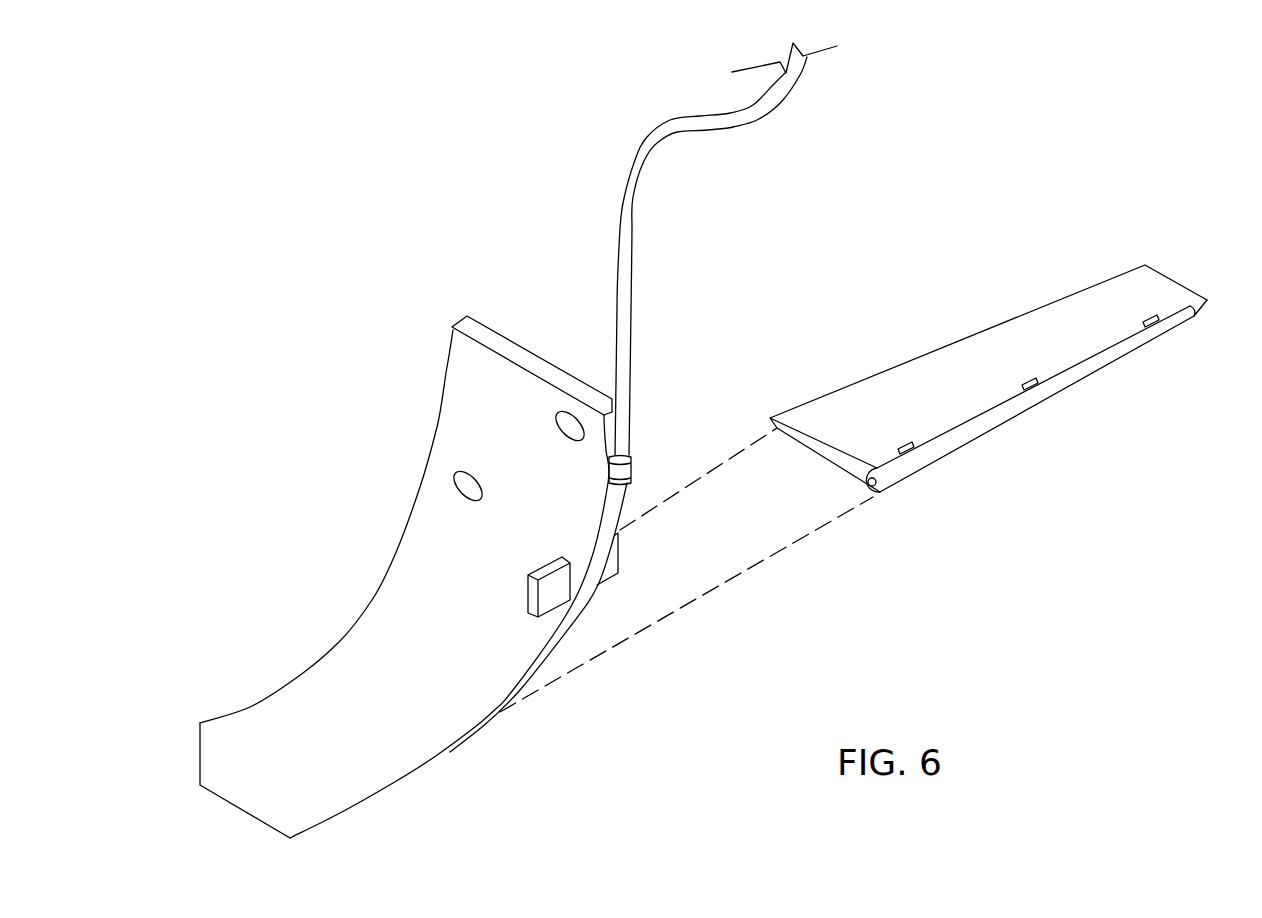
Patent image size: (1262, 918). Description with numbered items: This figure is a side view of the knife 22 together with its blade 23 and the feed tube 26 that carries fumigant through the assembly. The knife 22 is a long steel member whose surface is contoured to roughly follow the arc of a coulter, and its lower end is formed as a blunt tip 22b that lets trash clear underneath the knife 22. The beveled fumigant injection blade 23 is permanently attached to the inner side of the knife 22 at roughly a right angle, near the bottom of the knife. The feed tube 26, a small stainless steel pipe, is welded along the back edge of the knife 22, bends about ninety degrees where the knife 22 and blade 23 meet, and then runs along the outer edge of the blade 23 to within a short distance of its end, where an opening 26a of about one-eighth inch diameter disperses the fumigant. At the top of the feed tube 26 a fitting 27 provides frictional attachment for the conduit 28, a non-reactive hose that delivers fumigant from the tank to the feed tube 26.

The knife 22 is at (388, 622).
The blunt tip 22b is at (198, 752).
The blade 23 is at (1000, 340).
The feed tube 26 is at (565, 627).
The opening 26a is at (1207, 305).
The fitting 27 is at (627, 468).
The conduit 28 is at (632, 225).